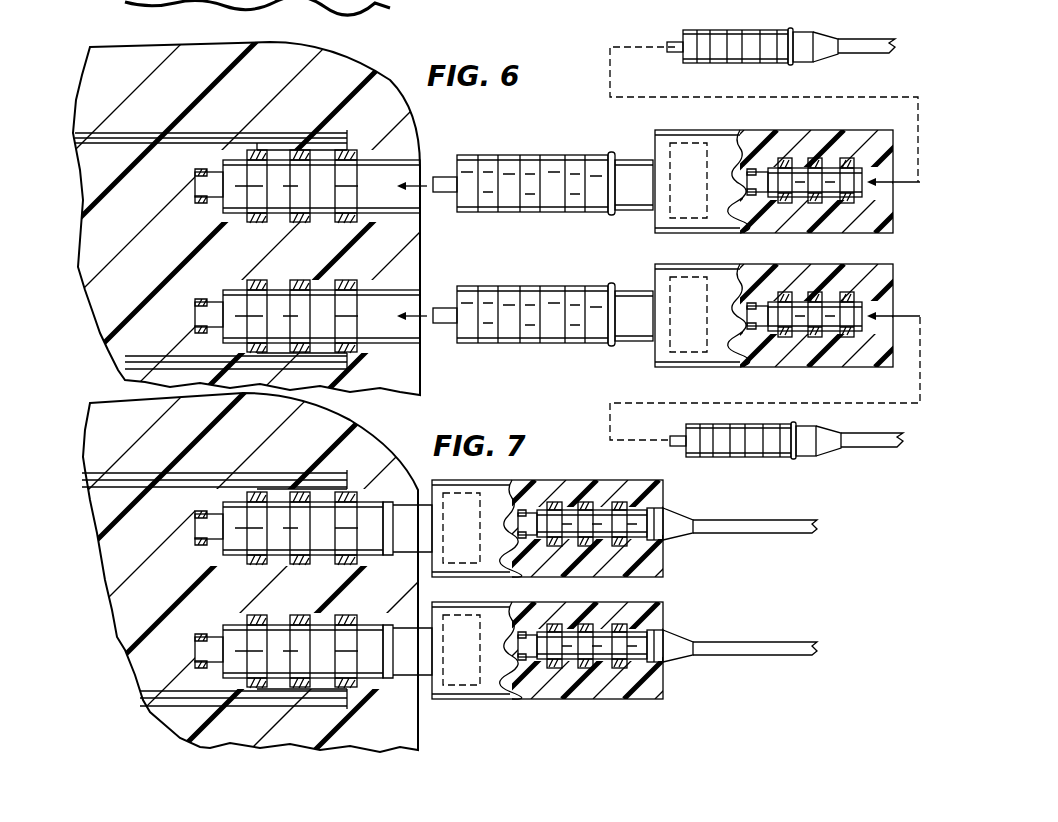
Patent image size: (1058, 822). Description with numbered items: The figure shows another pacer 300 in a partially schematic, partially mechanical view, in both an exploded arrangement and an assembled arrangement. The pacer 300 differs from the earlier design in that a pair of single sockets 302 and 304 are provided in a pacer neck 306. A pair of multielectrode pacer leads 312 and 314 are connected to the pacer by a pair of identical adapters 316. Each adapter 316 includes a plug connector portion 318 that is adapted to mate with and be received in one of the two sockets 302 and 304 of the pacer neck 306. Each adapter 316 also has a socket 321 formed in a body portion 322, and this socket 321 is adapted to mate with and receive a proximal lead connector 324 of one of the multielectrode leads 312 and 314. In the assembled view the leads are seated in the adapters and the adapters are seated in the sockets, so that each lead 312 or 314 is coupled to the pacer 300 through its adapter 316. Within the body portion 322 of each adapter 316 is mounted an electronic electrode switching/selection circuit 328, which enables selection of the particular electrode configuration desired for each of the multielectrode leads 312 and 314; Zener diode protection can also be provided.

In FIG. 6, the pacer 300 is at (433, 143).
In FIG. 7, the pacer 300 is at (403, 447).
In FIG. 6, the single socket 302 is at (388, 163).
In FIG. 7, the single socket 302 is at (385, 500).
In FIG. 6, the single socket 304 is at (405, 333).
In FIG. 7, the single socket 304 is at (412, 680).
In FIG. 6, the pacer neck 306 is at (128, 58).
In FIG. 7, the pacer neck 306 is at (115, 431).
In FIG. 6, the multielectrode pacer lead 312 is at (851, 42).
In FIG. 7, the multielectrode pacer lead 312 is at (758, 532).
In FIG. 7, the multielectrode pacer lead 314 is at (762, 657).
In FIG. 6, the adapter 316 is at (651, 219).
In FIG. 6, the plug connector portion 318 is at (549, 163).
In FIG. 6, the socket 321 is at (883, 170).
In FIG. 7, the socket 321 is at (665, 545).
In FIG. 6, the body portion 322 is at (720, 145).
In FIG. 7, the body portion 322 is at (573, 487).
In FIG. 6, the proximal lead connector 324 is at (717, 32).
In FIG. 7, the proximal lead connector 324 is at (671, 513).
In FIG. 6, the electronic electrode switching/selection circuit 328 is at (688, 130).
In FIG. 7, the electronic electrode switching/selection circuit 328 is at (465, 490).